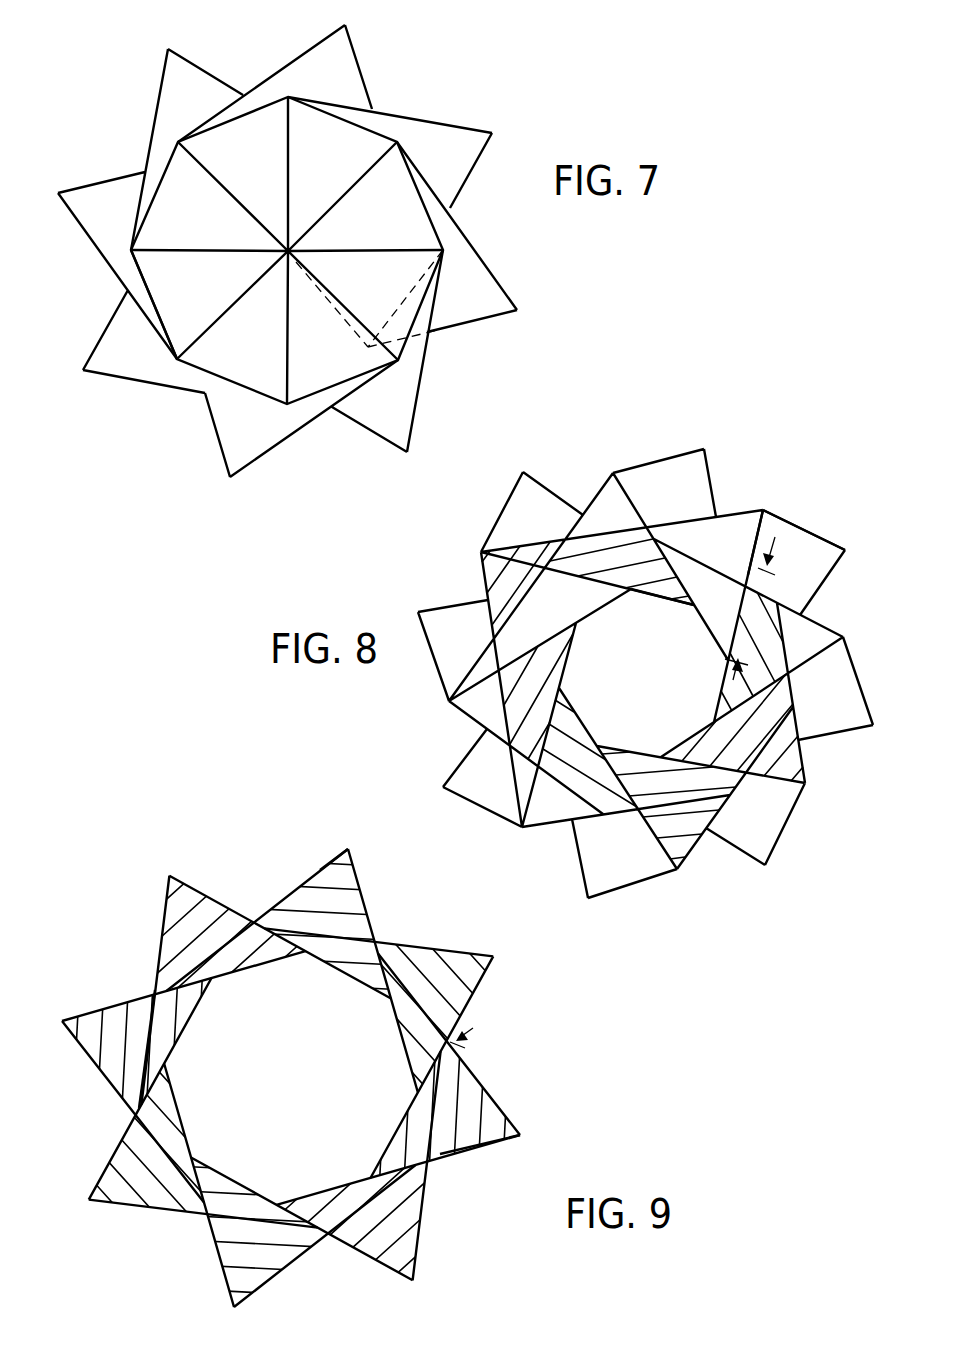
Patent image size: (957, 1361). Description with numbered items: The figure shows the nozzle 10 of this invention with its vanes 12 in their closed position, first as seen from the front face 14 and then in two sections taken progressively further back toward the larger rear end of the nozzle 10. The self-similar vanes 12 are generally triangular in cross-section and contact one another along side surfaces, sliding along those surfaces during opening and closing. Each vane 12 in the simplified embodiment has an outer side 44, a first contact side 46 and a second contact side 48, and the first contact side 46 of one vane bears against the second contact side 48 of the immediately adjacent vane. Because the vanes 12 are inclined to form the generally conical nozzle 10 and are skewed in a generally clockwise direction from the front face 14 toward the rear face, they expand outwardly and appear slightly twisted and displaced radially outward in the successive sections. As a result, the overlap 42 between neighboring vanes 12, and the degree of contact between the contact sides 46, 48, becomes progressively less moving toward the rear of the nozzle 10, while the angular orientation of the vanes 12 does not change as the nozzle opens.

In FIG. 7, the folded display structure 10 is at (170, 423).
In FIG. 7, the fold line 12 is at (403, 219).
In FIG. 8, the fold line 12 is at (737, 533).
In FIG. 9, the fold line 12 is at (498, 1106).
In FIG. 7, the front face 14 is at (155, 305).
In FIG. 8, the overlap 42 is at (731, 687).
In FIG. 9, the overlap 42 is at (470, 1028).
In FIG. 7, the outer side 44 is at (170, 107).
In FIG. 8, the outer side 44 is at (664, 480).
In FIG. 9, the outer side 44 is at (217, 895).
In FIG. 8, the first contact side 46 is at (570, 637).
In FIG. 9, the first contact side 46 is at (180, 1102).
In FIG. 8, the second contact side 48 is at (640, 508).
In FIG. 9, the second contact side 48 is at (317, 870).